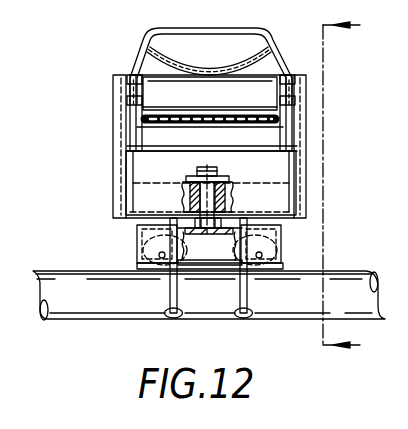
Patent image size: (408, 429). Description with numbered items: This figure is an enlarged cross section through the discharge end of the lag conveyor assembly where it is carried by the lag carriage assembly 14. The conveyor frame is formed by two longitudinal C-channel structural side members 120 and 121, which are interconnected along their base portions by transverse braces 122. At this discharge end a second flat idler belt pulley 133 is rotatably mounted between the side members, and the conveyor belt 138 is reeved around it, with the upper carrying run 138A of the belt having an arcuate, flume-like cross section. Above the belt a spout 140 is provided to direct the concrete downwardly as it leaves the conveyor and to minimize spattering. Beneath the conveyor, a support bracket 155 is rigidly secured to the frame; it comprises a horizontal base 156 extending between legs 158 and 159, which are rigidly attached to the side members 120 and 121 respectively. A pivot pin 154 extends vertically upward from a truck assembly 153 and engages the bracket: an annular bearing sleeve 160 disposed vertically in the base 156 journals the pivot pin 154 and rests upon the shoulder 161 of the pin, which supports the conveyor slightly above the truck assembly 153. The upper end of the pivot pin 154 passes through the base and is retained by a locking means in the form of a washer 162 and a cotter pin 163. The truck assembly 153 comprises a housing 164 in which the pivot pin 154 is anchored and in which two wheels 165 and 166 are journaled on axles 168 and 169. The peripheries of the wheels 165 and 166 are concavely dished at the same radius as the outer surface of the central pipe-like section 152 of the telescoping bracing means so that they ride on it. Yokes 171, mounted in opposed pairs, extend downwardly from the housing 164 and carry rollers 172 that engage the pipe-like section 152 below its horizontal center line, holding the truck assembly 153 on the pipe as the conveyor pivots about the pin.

The lag carriage assembly 14 is at (357, 186).
The longitudinal C-channel structural side member 120 is at (130, 127).
The longitudinal C-channel structural side member 121 is at (301, 124).
The transverse brace 122 is at (213, 136).
The idler belt pulley 133 is at (210, 93).
The conveyor belt 138 is at (276, 101).
The upper carrying run 138A is at (133, 48).
The spout 140 is at (267, 29).
The central pipe-like section 152 is at (209, 295).
The truck assembly 153 is at (104, 229).
The pivot pin 154 is at (228, 204).
The support bracket 155 is at (108, 192).
The horizontal base 156 is at (285, 188).
The leg 158 is at (303, 162).
The leg 159 is at (116, 158).
The annular bearing sleeve 160 is at (186, 196).
The shoulder 161 is at (224, 223).
The washer 162 is at (220, 175).
The cotter pin 163 is at (197, 171).
The housing 164 is at (238, 232).
The wheel 165 is at (258, 268).
The wheel 166 is at (163, 271).
The axle 168 is at (262, 254).
The axle 169 is at (159, 255).
The yoke 171 is at (169, 283).
The roller 172 is at (163, 322).